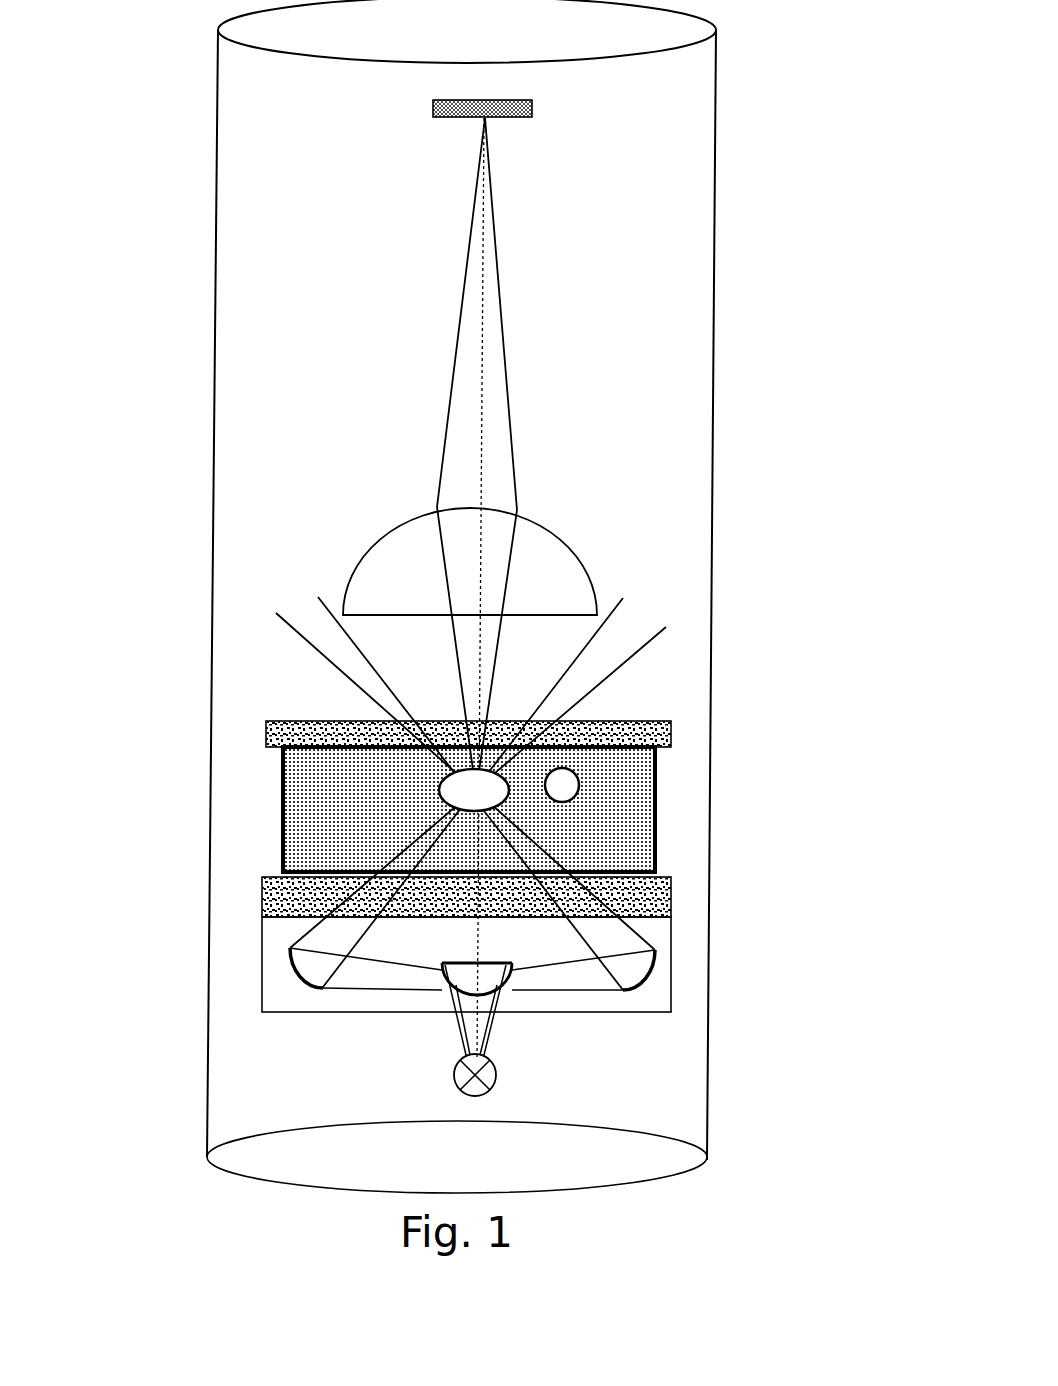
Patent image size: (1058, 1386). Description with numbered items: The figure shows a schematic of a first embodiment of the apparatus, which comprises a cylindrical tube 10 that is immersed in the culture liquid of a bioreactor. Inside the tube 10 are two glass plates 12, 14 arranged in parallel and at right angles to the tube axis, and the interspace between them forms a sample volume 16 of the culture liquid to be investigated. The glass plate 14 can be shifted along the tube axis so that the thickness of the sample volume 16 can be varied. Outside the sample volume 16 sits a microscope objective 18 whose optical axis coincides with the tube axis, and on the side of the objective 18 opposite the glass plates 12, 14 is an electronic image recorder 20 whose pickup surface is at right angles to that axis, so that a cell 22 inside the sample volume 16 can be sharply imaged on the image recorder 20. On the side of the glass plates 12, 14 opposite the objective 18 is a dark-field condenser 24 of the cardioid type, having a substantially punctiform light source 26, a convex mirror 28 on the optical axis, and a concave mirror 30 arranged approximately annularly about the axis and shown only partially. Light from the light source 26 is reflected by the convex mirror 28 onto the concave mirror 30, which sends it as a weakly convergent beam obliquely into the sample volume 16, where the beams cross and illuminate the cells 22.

The cylindrical tube 10 is at (714, 372).
The glass plate 12 is at (668, 728).
The glass plate 14 is at (671, 897).
The sample volume 16 is at (590, 830).
The microscope objective 18 is at (557, 575).
The image recorder 20 is at (532, 110).
The cell 22 is at (498, 792).
The dark-field condenser 24 is at (262, 963).
The light source 26 is at (495, 1083).
The convex mirror 28 is at (510, 992).
The concave mirror 30 is at (652, 975).